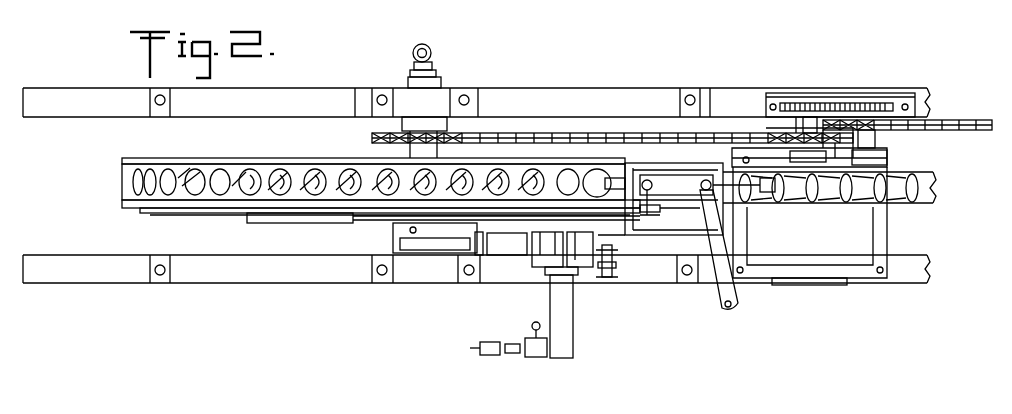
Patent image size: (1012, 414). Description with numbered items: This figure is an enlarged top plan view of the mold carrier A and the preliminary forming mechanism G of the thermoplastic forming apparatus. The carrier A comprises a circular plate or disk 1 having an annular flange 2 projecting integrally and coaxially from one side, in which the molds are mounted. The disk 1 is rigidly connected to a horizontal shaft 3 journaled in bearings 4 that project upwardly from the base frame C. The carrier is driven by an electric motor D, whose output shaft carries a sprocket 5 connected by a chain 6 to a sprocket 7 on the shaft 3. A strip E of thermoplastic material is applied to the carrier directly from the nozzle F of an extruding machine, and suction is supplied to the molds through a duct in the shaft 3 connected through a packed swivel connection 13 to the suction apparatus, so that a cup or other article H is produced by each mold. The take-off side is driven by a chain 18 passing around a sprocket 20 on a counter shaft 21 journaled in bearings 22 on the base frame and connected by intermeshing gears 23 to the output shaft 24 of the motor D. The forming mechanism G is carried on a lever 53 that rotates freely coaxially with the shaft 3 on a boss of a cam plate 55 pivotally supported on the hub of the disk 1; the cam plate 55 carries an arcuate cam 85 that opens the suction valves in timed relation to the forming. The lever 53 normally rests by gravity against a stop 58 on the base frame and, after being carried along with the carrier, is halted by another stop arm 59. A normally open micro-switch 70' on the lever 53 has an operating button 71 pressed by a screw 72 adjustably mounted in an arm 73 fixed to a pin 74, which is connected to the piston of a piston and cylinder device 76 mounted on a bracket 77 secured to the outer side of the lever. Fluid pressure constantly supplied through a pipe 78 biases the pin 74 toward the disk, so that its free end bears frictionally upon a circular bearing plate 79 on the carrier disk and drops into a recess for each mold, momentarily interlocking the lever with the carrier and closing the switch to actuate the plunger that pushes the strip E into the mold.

The circular plate or disk 1 is at (148, 210).
The annular flange 2 is at (140, 158).
The horizontal shaft 3 is at (442, 82).
The bearings 4 is at (412, 272).
The sprocket 5 is at (776, 132).
The chain 6 is at (594, 133).
The sprocket 7 is at (456, 132).
The packed swivel connection 13 is at (414, 66).
The chain 18 is at (955, 120).
The sprocket 20 is at (872, 131).
The counter shaft 21 is at (876, 140).
The bearings 22 is at (866, 91).
The intermeshing gears 23 is at (862, 104).
The output shaft 24 is at (808, 118).
The combined mounting and actuating first element or lever 53 is at (512, 236).
The cam plate 55 is at (334, 222).
The stop 58 is at (480, 248).
The stop arm 59 is at (400, 230).
The micro-switch 70' is at (670, 260).
The operating button 71 is at (612, 250).
The screw 72 is at (612, 278).
The arm 73 is at (580, 242).
The pin 74 is at (548, 238).
The piston and cylinder device 76 is at (574, 340).
The bracket 77 is at (578, 278).
The pipe 78 is at (541, 355).
The circular bearing plate 79 is at (228, 216).
The arcuate cam 85 is at (513, 215).
The carrier A is at (194, 158).
The base frame C is at (652, 95).
The electric motor D is at (853, 250).
The strip of thermoplastic material E is at (128, 181).
The nozzle F is at (740, 300).
The preliminary forming mechanism G is at (694, 159).
The cup or other article H is at (900, 190).